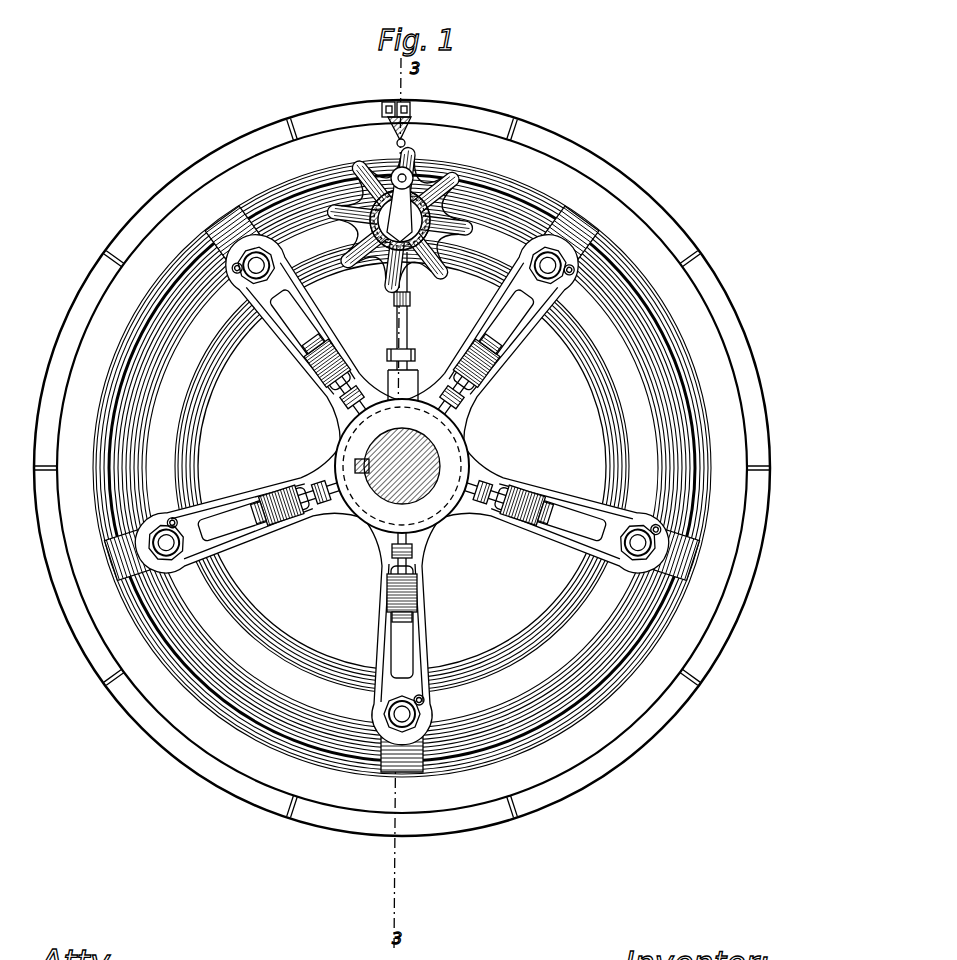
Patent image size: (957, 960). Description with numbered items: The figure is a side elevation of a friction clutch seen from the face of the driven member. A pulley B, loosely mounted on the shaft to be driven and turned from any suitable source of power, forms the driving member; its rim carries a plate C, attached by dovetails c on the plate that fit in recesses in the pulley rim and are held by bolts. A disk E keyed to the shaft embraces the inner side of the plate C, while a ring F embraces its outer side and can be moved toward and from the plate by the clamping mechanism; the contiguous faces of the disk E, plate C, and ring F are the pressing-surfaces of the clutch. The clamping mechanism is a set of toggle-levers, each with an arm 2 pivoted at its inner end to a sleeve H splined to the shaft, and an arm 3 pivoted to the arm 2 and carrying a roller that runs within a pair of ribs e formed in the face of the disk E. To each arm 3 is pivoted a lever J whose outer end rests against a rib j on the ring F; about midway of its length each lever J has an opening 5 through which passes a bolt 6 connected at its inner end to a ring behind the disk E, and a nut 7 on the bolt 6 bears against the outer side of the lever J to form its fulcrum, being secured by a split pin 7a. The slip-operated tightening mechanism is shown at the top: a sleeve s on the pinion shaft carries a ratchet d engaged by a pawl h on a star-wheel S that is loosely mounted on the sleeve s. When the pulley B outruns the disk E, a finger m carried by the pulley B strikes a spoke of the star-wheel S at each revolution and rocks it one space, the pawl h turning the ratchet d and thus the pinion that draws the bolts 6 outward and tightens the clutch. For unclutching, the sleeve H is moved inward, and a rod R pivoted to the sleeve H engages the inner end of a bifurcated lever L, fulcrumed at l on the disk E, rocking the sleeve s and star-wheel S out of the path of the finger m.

The pulley B is at (484, 830).
The plate C is at (746, 378).
The dovetails c is at (627, 764).
The rib j is at (478, 726).
The lever J is at (428, 664).
The ribs e is at (432, 608).
The disk E is at (402, 466).
The ring F is at (628, 420).
The opening 5 is at (400, 732).
The bolt 6 is at (414, 704).
The nut 7 is at (392, 710).
The split pin 7a is at (424, 708).
The toggle-lever arm 3 is at (400, 606).
The toggle-lever arm 2 is at (334, 406).
The sleeve H is at (426, 504).
The lever L is at (414, 330).
The fulcrum l is at (406, 296).
The rod R is at (390, 352).
The star-wheel S is at (399, 219).
The sleeve s is at (389, 220).
The star wheel arm r is at (399, 219).
The ratchet d is at (384, 208).
The pawl h is at (416, 180).
The finger m is at (390, 126).